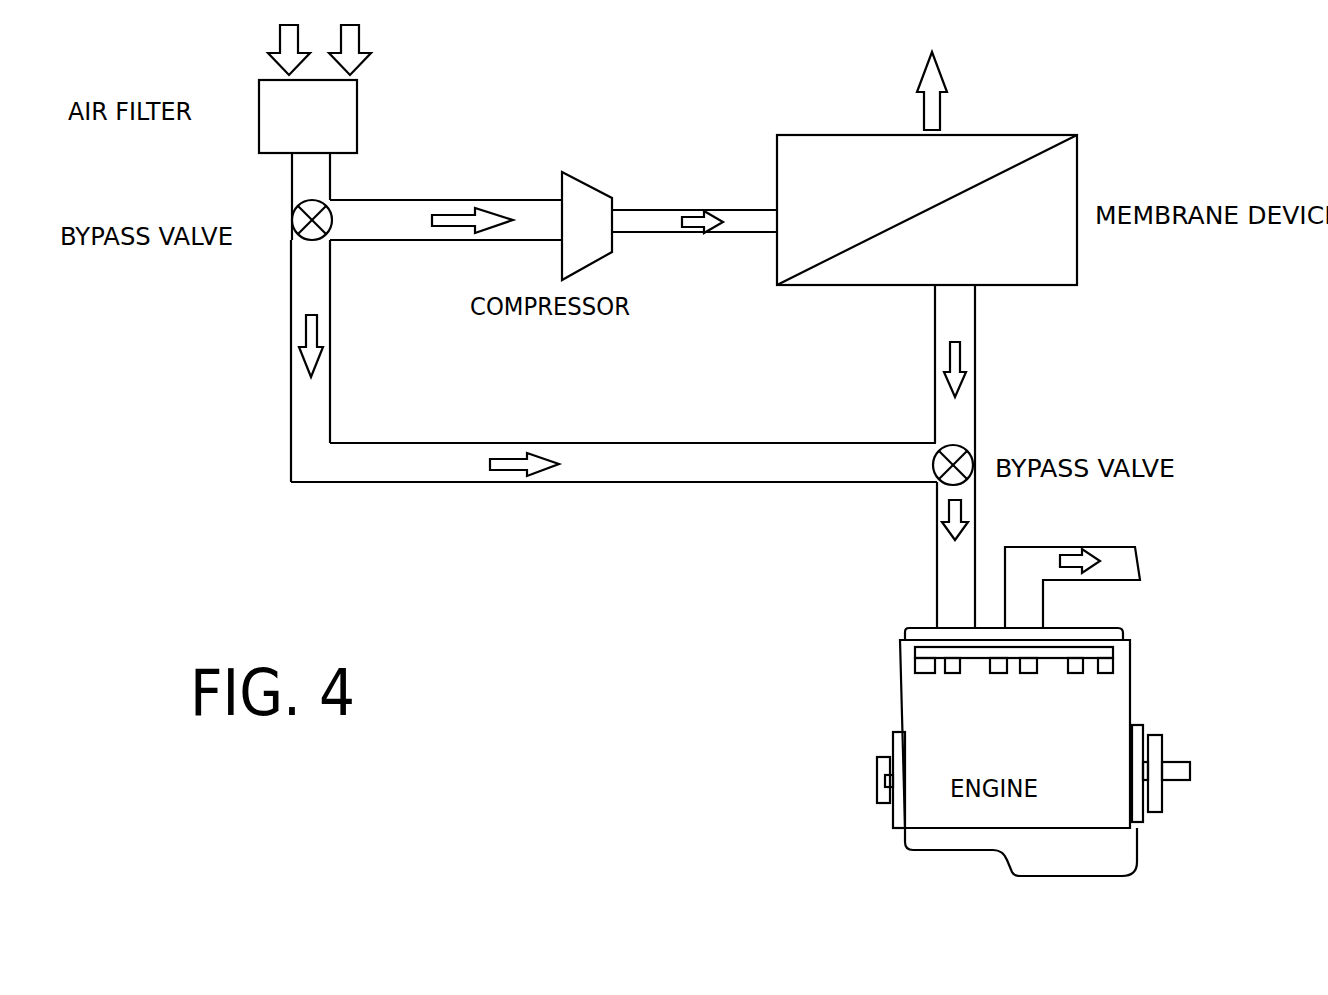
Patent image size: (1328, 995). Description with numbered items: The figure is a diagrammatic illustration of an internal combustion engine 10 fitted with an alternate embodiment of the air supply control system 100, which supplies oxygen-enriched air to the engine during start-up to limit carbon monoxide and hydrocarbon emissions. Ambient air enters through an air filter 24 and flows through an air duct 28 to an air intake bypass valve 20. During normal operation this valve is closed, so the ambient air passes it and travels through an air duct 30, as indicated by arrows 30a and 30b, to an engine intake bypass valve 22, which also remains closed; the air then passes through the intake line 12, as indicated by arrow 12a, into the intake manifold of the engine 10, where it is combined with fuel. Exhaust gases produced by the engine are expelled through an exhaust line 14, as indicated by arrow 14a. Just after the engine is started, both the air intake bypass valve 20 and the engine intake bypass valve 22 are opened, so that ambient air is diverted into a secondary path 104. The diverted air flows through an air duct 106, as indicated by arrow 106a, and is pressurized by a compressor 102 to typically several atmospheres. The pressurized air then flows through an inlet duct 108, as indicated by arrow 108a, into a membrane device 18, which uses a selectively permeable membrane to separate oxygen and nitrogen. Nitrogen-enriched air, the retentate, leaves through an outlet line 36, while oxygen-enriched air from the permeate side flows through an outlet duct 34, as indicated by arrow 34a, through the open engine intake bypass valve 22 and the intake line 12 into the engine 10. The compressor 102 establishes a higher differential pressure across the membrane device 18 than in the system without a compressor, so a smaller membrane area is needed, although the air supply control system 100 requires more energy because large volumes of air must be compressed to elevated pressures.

The air supply control system 100 is at (601, 94).
The air filter 24 is at (358, 100).
The air duct 28 is at (331, 170).
The air intake bypass valve 20 is at (297, 208).
The air duct 30 is at (290, 298).
The arrow 30a is at (303, 337).
The arrow 30b is at (519, 475).
The air duct 106 is at (462, 200).
The arrow 106a is at (463, 241).
The compressor 102 is at (585, 186).
The inlet duct 108 is at (655, 210).
The arrow 108a is at (712, 233).
The secondary path 104 is at (695, 305).
The membrane device 18 is at (833, 134).
The outlet line 36 is at (941, 110).
The outlet duct 34 is at (977, 308).
The arrow 34a is at (963, 352).
The engine intake bypass valve 22 is at (973, 456).
The intake line 12 is at (937, 560).
The arrow 12a is at (948, 505).
The exhaust line 14 is at (1128, 547).
The arrow 14a is at (1095, 575).
The internal combustion engine 10 is at (905, 864).